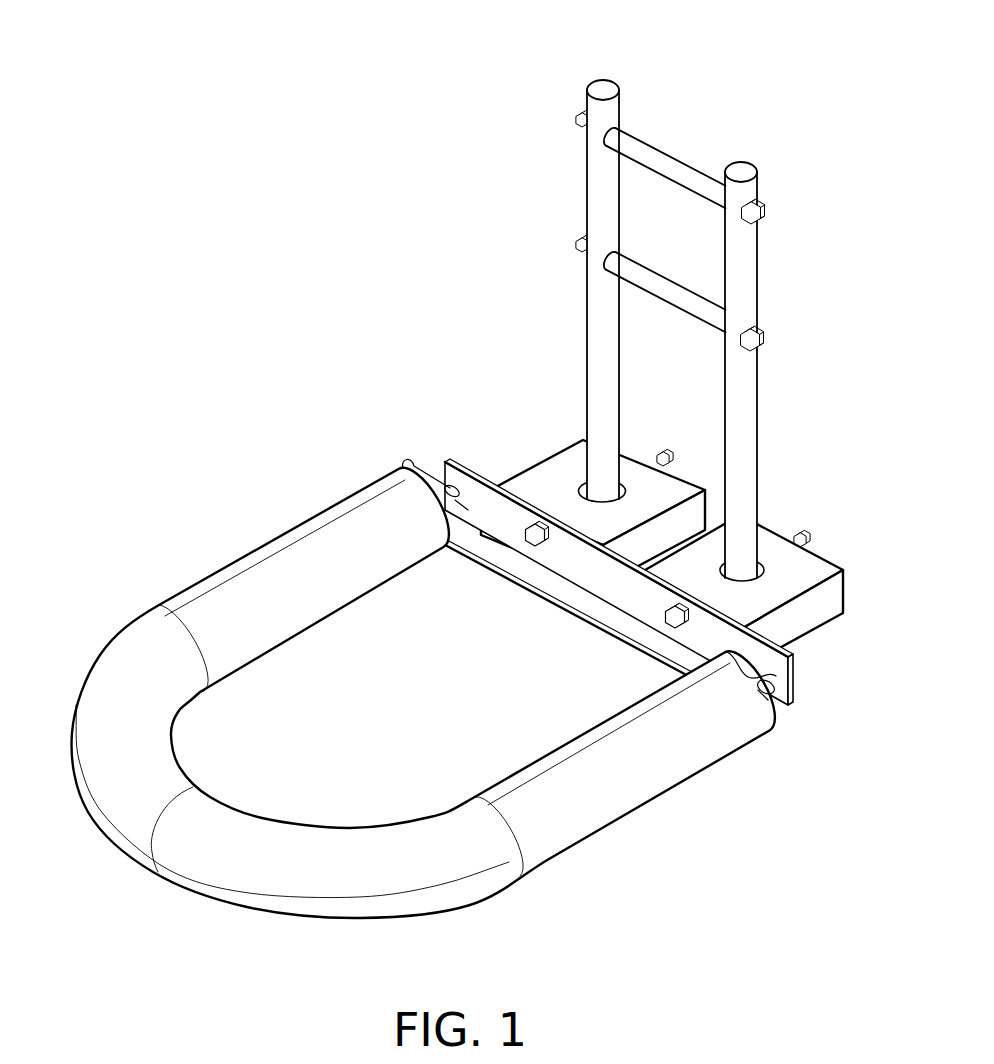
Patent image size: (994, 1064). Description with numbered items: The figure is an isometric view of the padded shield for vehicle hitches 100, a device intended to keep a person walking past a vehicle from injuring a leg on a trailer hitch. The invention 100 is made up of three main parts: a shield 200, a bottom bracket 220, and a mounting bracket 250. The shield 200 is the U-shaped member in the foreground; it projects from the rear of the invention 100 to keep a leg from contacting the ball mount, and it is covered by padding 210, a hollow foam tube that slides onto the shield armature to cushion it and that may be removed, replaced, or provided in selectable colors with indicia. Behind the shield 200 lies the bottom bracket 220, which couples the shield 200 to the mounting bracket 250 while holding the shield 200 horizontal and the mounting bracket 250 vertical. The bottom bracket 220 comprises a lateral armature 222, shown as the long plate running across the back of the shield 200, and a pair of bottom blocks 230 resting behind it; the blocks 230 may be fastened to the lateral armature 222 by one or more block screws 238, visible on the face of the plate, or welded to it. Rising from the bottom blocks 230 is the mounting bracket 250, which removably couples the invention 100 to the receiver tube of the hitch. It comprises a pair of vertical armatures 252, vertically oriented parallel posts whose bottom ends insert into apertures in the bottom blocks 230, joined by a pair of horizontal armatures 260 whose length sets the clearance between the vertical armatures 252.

The padded shield for vehicle hitches 100 is at (343, 268).
The shield 200 is at (377, 438).
The padding 210 is at (258, 906).
The bottom bracket 220 is at (775, 738).
The lateral armature 222 is at (558, 600).
The pair of bottom blocks 230 is at (545, 463).
The block screws 238 is at (527, 537).
The mounting bracket 250 is at (797, 157).
The pair of vertical armatures 252 is at (733, 413).
The pair of horizontal armatures 260 is at (663, 287).